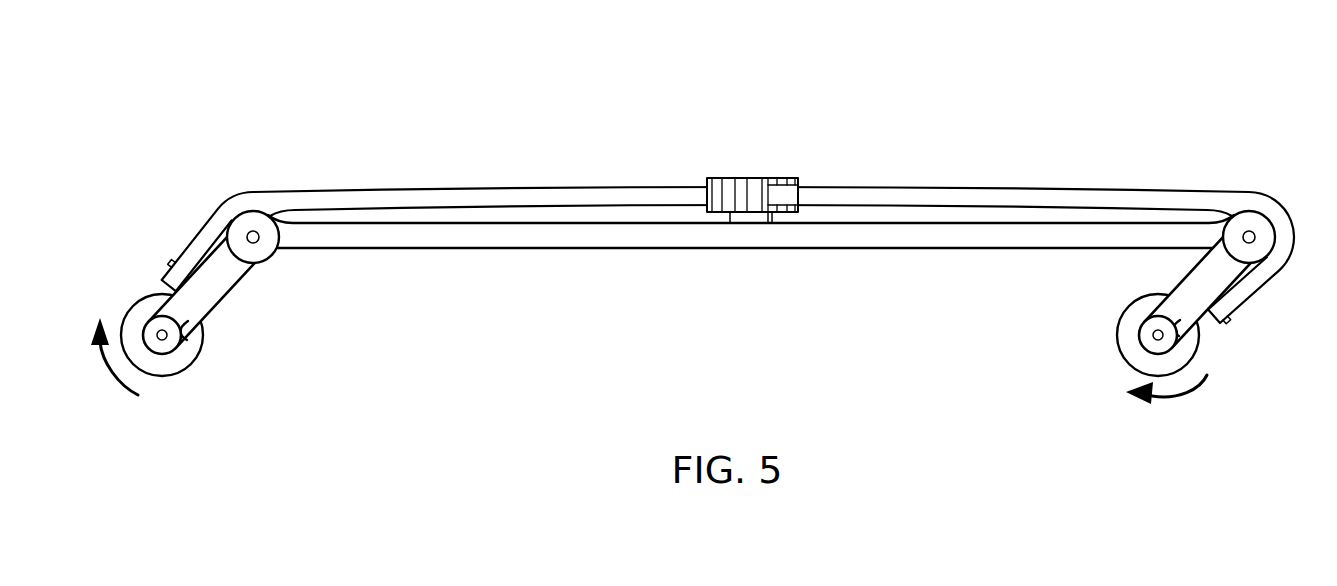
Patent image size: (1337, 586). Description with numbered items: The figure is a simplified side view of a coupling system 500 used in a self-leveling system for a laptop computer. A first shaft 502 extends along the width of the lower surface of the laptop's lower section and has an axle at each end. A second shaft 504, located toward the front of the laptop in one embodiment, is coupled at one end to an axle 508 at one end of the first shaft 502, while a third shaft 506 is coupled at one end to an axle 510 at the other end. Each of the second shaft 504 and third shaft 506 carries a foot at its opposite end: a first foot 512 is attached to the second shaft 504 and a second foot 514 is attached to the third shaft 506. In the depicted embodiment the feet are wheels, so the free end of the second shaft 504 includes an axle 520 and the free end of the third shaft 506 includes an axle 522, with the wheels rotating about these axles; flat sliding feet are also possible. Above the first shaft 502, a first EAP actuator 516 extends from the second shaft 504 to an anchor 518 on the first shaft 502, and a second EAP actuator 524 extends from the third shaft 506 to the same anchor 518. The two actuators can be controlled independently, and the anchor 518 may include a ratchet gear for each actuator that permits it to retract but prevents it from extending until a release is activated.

The coupling system 500 is at (409, 115).
The first shaft 502 is at (616, 250).
The second shaft 504 is at (224, 303).
The third shaft 506 is at (1186, 280).
The axle 508 is at (272, 258).
The axle 510 is at (1260, 198).
The first foot 512 is at (175, 377).
The second foot 514 is at (1118, 333).
The first EAP actuator 516 is at (604, 187).
The anchor 518 is at (746, 177).
The axle 520 is at (158, 335).
The axle 522 is at (1155, 336).
The second EAP actuator 524 is at (906, 186).